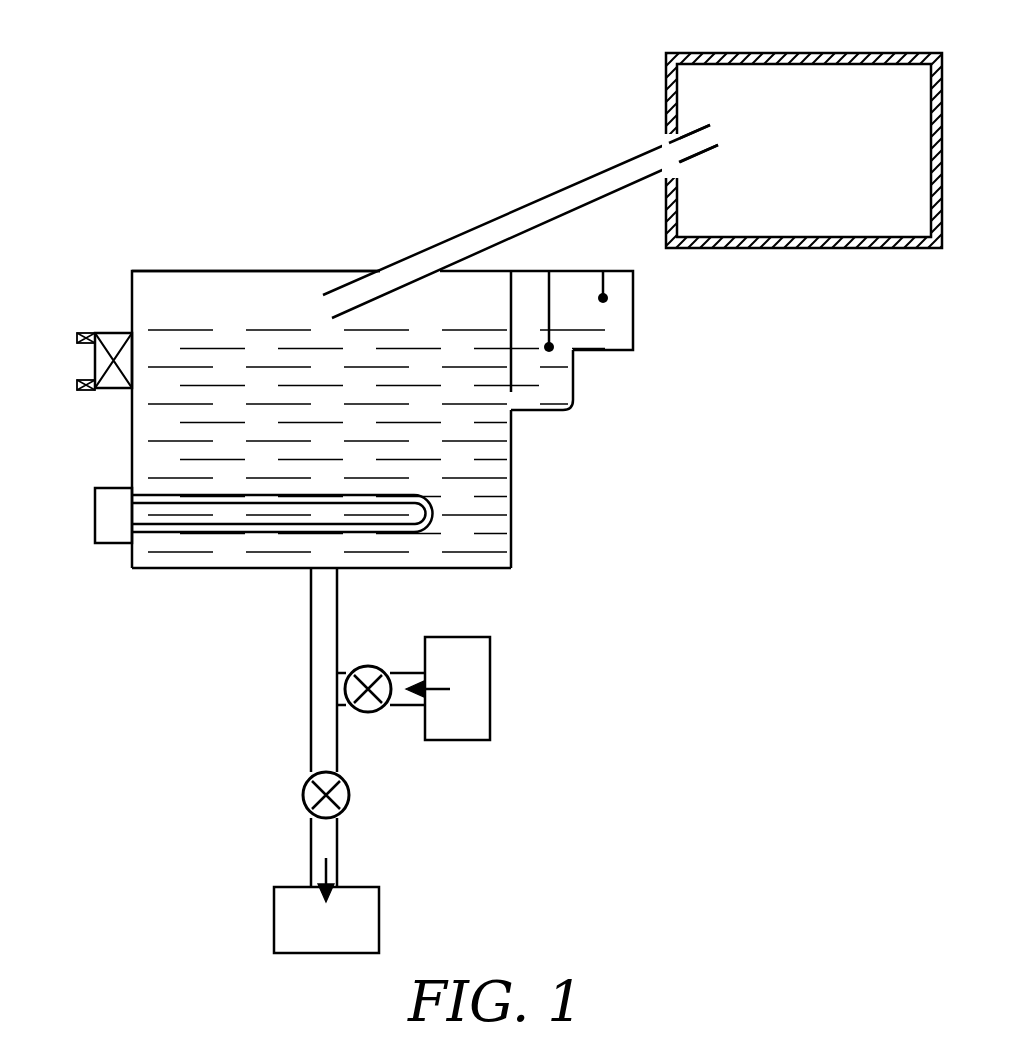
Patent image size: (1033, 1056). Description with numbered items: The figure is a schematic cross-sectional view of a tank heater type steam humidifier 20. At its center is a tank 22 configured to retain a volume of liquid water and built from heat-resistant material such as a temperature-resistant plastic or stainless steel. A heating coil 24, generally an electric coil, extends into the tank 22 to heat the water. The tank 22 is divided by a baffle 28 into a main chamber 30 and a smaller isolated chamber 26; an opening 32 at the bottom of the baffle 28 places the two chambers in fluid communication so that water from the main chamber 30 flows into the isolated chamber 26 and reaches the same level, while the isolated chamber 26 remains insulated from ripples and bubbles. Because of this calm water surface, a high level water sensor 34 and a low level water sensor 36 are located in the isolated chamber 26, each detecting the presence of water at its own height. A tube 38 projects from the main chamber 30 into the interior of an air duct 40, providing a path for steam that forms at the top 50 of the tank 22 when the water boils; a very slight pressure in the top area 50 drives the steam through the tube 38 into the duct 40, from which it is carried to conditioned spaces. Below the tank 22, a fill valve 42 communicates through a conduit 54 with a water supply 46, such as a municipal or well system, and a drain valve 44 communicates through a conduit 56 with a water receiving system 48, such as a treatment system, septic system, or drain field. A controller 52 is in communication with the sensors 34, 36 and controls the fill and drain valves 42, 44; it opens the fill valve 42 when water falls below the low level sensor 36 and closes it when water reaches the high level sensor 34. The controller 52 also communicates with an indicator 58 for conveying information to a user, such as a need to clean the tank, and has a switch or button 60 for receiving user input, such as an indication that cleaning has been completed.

The humidifier 20 is at (196, 92).
The tank 22 is at (512, 523).
The heating coil 24 is at (168, 537).
The isolated chamber 26 is at (614, 314).
The baffle 28 is at (510, 298).
The main chamber 30 is at (208, 286).
The opening 32 is at (511, 402).
The high level water sensor 34 is at (607, 294).
The low level water sensor 36 is at (551, 352).
The tube 38 is at (542, 200).
The air duct 40 is at (665, 98).
The fill valve 42 is at (367, 665).
The drain valve 44 is at (342, 784).
The water supply 46 is at (470, 636).
The water receiving system 48 is at (360, 886).
The top of tank 50 is at (270, 286).
The controller 52 is at (95, 360).
The conduit 54 is at (406, 673).
The conduit 56 is at (340, 840).
The indicator 58 is at (85, 331).
The switch or button 60 is at (86, 391).